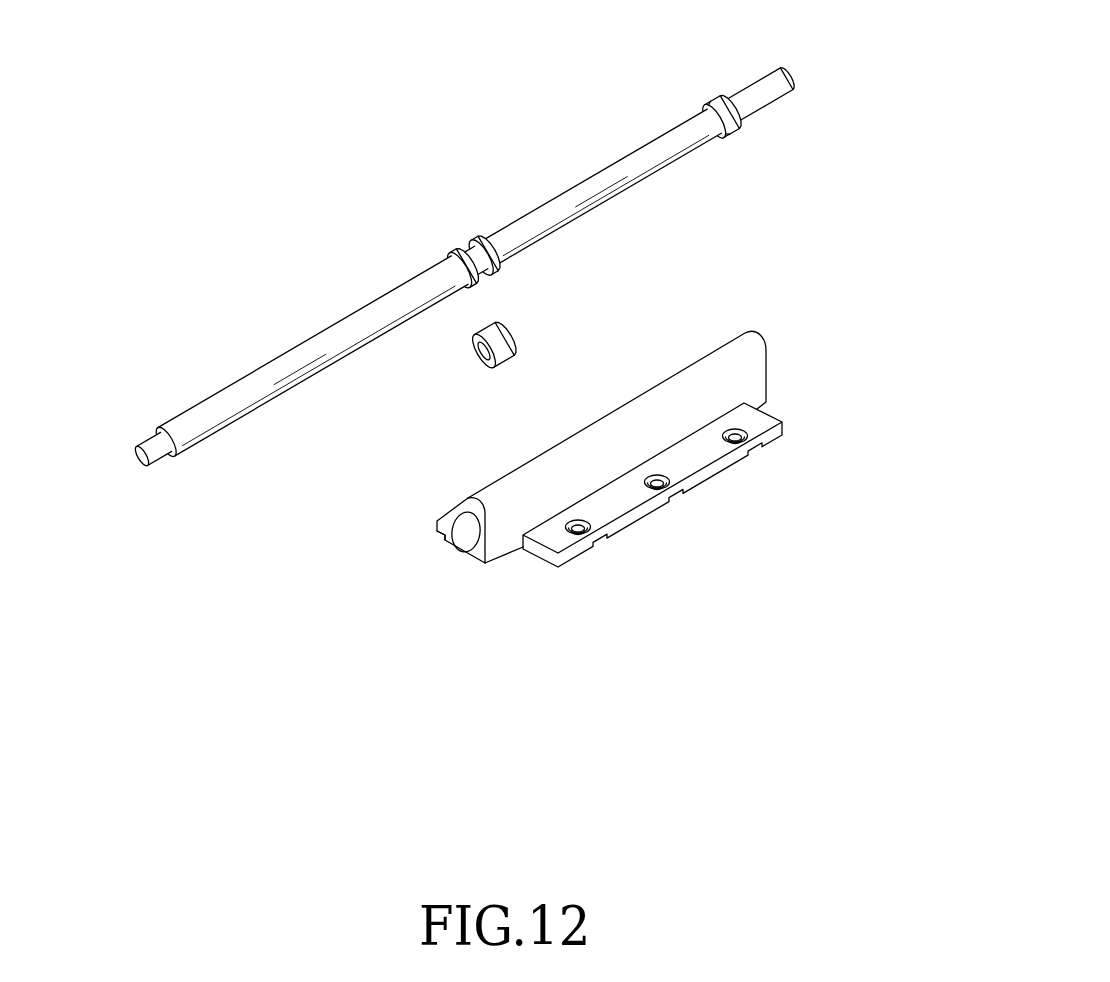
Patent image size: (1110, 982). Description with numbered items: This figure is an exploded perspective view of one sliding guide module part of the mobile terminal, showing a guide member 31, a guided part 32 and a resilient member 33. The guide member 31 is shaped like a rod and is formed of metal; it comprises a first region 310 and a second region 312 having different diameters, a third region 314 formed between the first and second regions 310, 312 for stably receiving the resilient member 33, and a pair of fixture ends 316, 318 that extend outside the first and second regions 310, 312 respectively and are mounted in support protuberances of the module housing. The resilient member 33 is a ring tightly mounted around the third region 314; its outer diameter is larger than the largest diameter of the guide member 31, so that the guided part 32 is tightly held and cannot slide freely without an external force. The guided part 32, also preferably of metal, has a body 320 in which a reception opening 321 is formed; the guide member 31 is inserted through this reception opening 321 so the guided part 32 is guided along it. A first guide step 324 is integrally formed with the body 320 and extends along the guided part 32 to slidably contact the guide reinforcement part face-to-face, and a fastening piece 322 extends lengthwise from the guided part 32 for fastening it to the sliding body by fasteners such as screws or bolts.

The guide member 31 is at (432, 245).
The first region 310 is at (651, 155).
The second region 312 is at (317, 353).
The third region 314 is at (478, 253).
The fixture end 316 is at (758, 90).
The fixture end 318 is at (150, 447).
The resilient member 33 is at (530, 328).
The guided part 32 is at (597, 455).
The body 320 is at (753, 347).
The reception opening 321 is at (465, 540).
The fastening piece 322 is at (690, 463).
The first guide step 324 is at (440, 533).